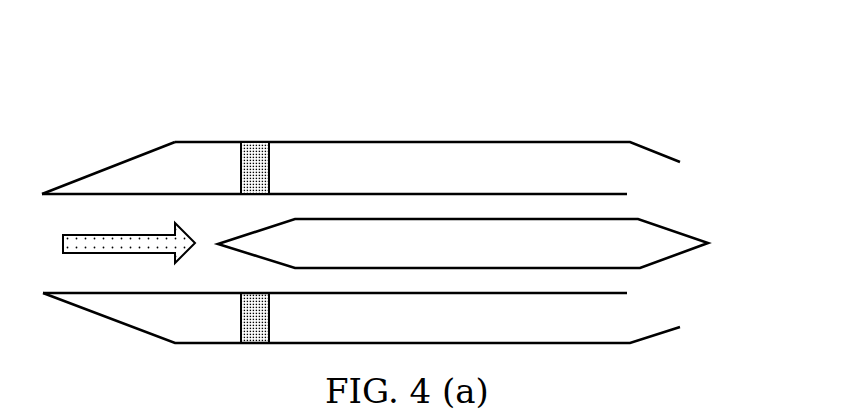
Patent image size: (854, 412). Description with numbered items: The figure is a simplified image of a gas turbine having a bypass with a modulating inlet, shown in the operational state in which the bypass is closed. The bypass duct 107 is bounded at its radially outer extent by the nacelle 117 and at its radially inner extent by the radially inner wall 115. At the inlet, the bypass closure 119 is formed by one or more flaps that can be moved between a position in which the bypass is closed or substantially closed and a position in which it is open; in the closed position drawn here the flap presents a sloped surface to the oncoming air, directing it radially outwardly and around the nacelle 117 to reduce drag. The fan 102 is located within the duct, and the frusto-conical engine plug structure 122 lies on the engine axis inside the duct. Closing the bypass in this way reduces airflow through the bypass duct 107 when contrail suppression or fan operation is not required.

The fan 102 is at (271, 168).
The bypass duct 107 is at (417, 182).
The radially inner wall 115 is at (598, 193).
The nacelle 117 is at (457, 141).
The bypass closure 119 is at (95, 172).
The engine plug structure 122 is at (675, 230).